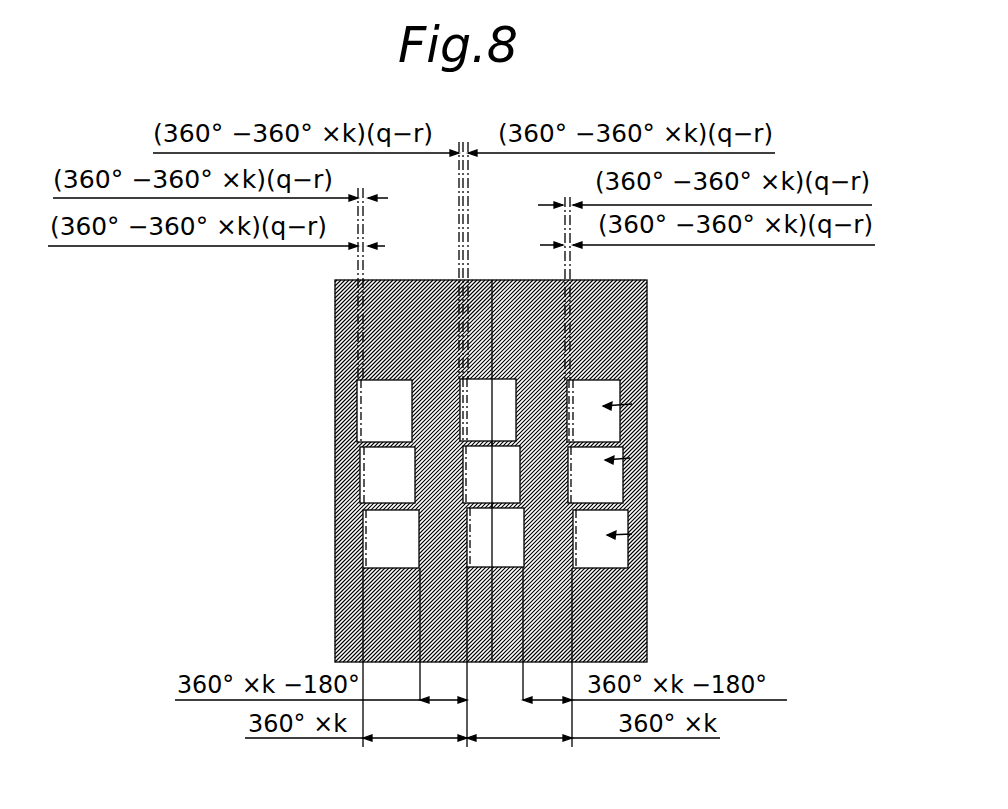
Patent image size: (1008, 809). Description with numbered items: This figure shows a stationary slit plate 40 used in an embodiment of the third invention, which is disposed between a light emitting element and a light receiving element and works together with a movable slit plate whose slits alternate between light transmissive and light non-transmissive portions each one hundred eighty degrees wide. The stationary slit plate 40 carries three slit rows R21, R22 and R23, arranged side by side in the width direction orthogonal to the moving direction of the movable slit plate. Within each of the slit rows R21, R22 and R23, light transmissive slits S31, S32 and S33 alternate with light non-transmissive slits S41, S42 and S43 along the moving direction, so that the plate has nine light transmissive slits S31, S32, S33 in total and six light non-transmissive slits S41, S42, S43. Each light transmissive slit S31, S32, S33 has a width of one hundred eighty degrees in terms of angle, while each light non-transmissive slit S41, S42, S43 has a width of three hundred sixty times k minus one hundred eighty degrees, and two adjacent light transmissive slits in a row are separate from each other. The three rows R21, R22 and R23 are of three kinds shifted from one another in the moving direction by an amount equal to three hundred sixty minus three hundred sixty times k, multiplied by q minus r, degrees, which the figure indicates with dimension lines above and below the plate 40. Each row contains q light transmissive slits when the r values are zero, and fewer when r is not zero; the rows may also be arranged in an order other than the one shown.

The stationary slit plate 40 is at (654, 293).
The light transmissive slit S31 is at (377, 547).
The light transmissive slit S32 is at (380, 475).
The light transmissive slit S33 is at (378, 428).
The light non-transmissive slit S41 is at (440, 540).
The light non-transmissive slit S42 is at (440, 473).
The light non-transmissive slit S43 is at (440, 400).
The slit row R21 is at (650, 534).
The slit row R22 is at (650, 456).
The slit row R23 is at (650, 402).